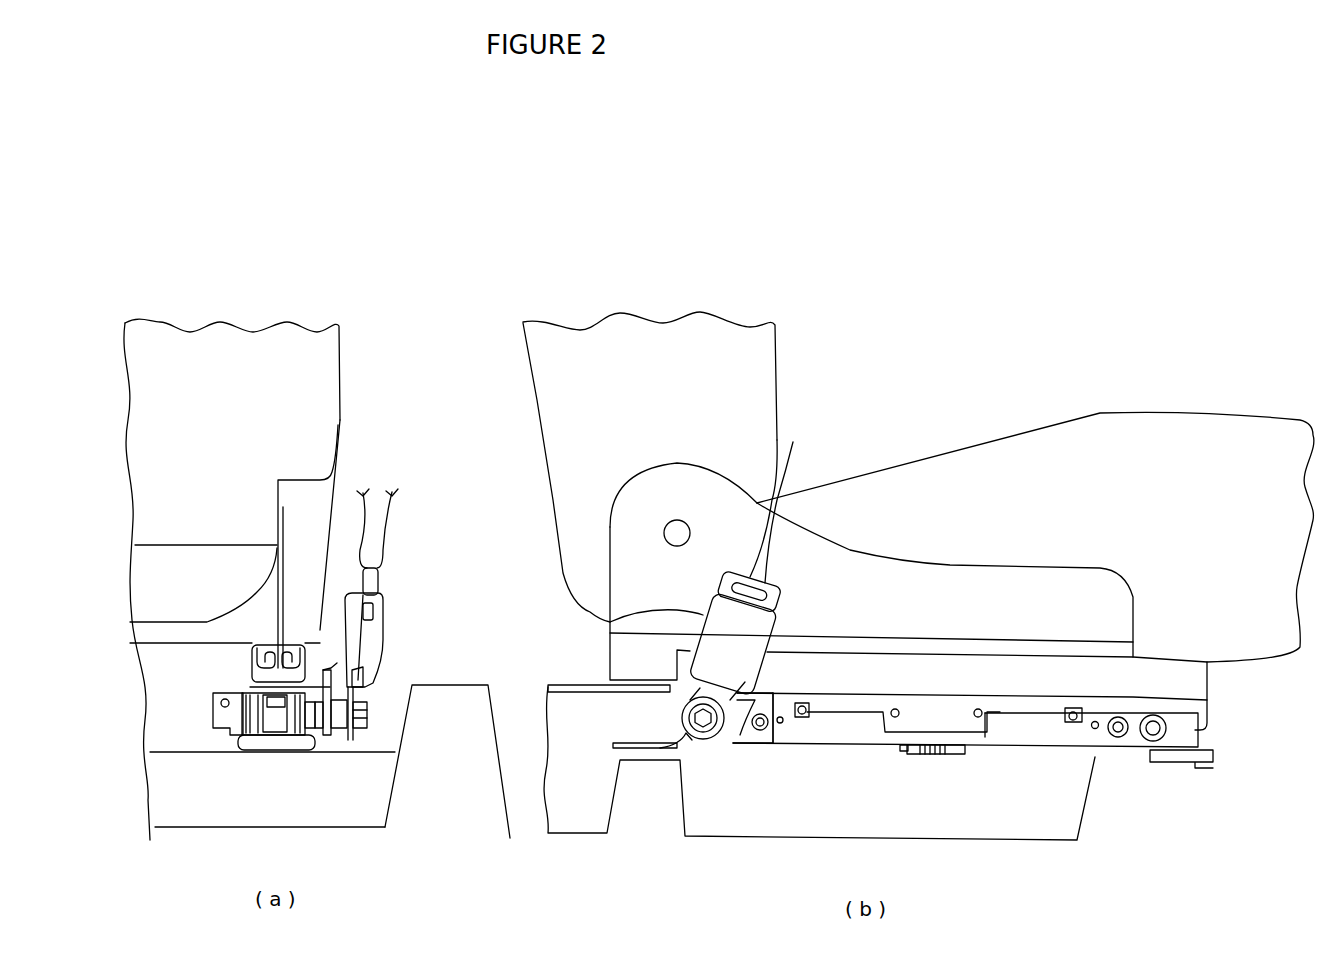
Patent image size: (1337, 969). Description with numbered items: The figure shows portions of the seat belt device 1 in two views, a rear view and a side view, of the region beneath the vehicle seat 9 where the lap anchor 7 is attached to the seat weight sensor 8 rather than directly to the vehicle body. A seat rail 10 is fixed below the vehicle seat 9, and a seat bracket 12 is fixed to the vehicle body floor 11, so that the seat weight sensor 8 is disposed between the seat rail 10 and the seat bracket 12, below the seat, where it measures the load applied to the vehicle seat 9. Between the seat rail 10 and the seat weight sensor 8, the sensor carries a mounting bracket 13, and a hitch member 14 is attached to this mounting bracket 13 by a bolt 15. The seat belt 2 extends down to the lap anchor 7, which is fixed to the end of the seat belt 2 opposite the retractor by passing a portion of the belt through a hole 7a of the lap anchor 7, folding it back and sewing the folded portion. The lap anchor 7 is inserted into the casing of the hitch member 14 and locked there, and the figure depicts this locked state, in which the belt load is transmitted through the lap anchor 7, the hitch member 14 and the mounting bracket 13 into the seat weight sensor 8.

The seat belt device 1 is at (445, 598).
The seat belt 2 is at (383, 527).
The lap anchor 7 is at (368, 585).
The hole 7a is at (757, 503).
The seat weight sensor 8 is at (232, 743).
The vehicle seat 9 is at (295, 412).
The seat rail 10 is at (250, 680).
The vehicle body floor 11 is at (289, 803).
The seat bracket 12 is at (308, 752).
The mounting bracket 13 is at (326, 690).
The hitch member 14 is at (383, 650).
The bolt 15 is at (368, 718).